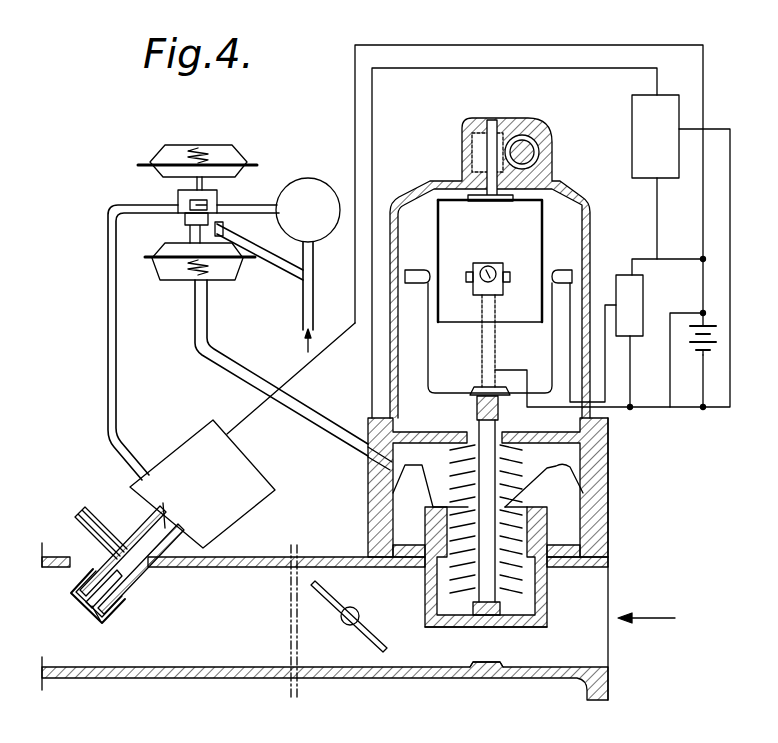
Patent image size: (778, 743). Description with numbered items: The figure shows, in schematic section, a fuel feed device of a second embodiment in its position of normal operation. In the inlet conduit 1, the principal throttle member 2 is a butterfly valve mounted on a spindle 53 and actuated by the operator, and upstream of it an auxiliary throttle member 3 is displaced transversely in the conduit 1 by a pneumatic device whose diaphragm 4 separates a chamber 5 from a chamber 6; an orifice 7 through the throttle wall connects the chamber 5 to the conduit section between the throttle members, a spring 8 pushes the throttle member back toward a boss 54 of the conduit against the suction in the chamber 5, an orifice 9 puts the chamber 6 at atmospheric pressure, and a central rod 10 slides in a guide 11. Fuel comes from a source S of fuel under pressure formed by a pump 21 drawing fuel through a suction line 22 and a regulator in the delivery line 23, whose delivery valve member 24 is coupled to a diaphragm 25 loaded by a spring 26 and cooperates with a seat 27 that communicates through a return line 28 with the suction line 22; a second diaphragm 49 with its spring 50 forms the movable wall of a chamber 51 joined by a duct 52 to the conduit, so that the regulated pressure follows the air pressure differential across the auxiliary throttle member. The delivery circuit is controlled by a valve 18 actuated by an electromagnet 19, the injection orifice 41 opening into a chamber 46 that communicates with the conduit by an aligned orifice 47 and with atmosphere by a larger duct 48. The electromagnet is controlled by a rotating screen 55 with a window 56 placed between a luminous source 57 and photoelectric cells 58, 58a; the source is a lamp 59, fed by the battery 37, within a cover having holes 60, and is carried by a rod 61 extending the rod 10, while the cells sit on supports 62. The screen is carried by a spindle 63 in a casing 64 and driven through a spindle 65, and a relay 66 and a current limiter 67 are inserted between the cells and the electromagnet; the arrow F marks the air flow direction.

The inlet conduit 1 is at (273, 645).
The principal throttle member 2 is at (375, 644).
The auxiliary throttle member 3 is at (447, 627).
The diaphragm 4 is at (573, 473).
The chamber 5 is at (570, 452).
The chamber 6 is at (572, 518).
The orifice 7 is at (433, 620).
The spring 8 is at (517, 606).
The orifice 9 is at (590, 568).
The central rod 10 is at (483, 588).
The guide 11 is at (462, 490).
The valve 18 is at (108, 572).
The electromagnet 19 is at (245, 504).
The pump 21 is at (315, 197).
The suction line 22 is at (311, 302).
The delivery line 23 is at (113, 381).
The delivery valve member 24 is at (207, 208).
The diaphragm 25 is at (230, 165).
The spring 26 is at (210, 146).
The seat 27 is at (185, 216).
The return line 28 is at (268, 254).
The battery 37 is at (707, 352).
The injection orifice 41 is at (106, 625).
The chamber 46 is at (70, 590).
The orifice 47 is at (72, 604).
The duct 48 is at (93, 530).
The second diaphragm 49 is at (157, 264).
The spring 50 is at (190, 278).
The chamber 51 is at (218, 268).
The duct 52 is at (200, 333).
The spindle 53 is at (355, 610).
The boss 54 is at (487, 663).
The screen 55 is at (438, 228).
The window 56 is at (542, 247).
The luminous source 57 is at (488, 262).
The photoelectric cell 58 is at (560, 273).
The photoelectric cell 58a is at (413, 271).
The lamp 59 is at (495, 278).
The hole 60 is at (470, 272).
The rod 61 is at (482, 350).
The support 62 is at (428, 338).
The spindle 63 is at (491, 125).
The casing 64 is at (565, 188).
The spindle 65 is at (527, 145).
The relay 66 is at (631, 298).
The current limiter 67 is at (640, 120).
The source of fuel under pressure S is at (175, 207).
The flow direction F is at (646, 604).